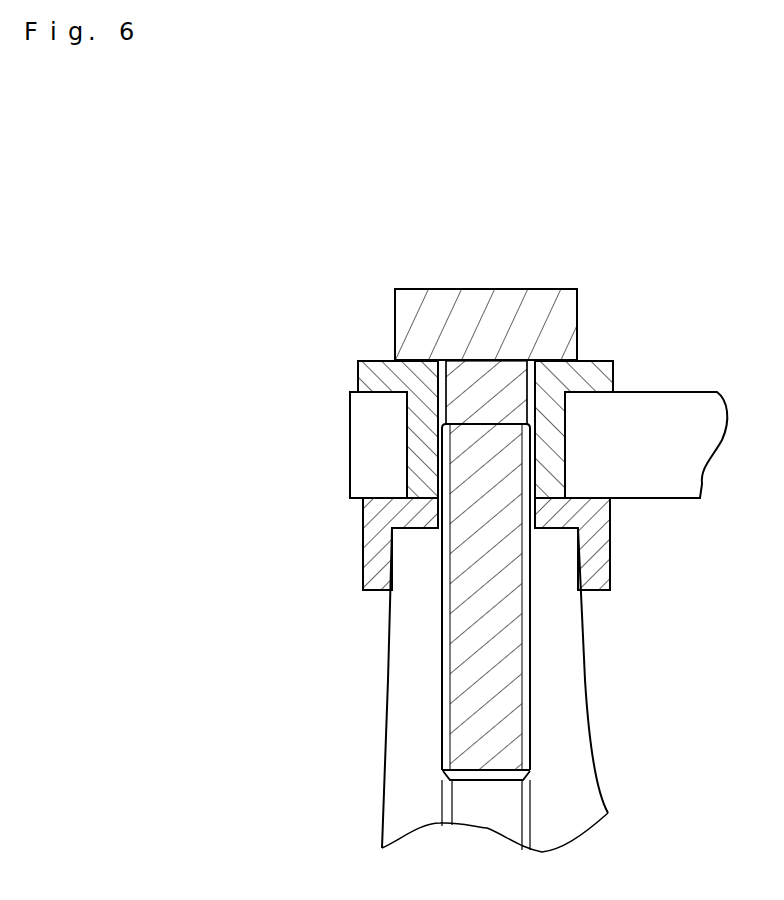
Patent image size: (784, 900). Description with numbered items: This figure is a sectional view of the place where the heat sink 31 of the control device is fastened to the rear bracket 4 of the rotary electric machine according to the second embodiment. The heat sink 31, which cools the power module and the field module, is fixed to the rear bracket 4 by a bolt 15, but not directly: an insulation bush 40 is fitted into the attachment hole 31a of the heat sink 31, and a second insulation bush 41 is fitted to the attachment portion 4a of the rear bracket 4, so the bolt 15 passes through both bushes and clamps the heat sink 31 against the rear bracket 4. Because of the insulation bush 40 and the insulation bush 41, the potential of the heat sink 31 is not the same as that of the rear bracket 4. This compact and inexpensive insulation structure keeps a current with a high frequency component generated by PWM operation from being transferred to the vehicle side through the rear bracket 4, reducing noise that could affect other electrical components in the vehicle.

The bolt 15 is at (512, 289).
The attachment hole 31a is at (570, 427).
The heat sink 31 is at (667, 425).
The insulation bush 40 is at (367, 372).
The insulation bush 41 is at (372, 545).
The attachment portion 4a is at (565, 550).
The rear bracket 4 is at (555, 712).